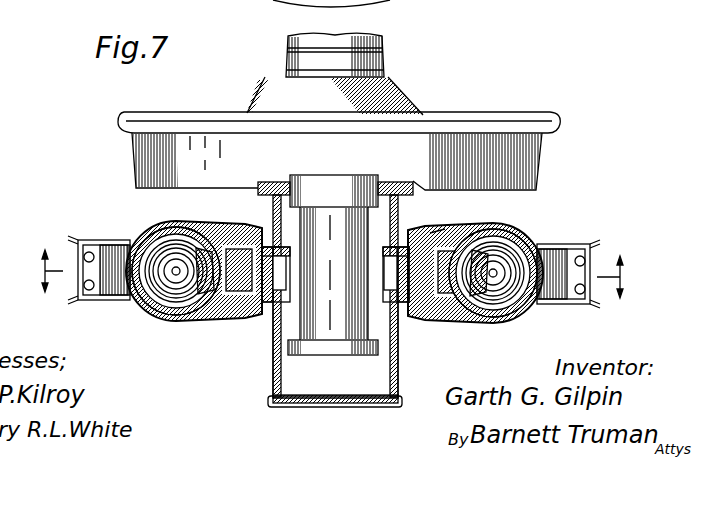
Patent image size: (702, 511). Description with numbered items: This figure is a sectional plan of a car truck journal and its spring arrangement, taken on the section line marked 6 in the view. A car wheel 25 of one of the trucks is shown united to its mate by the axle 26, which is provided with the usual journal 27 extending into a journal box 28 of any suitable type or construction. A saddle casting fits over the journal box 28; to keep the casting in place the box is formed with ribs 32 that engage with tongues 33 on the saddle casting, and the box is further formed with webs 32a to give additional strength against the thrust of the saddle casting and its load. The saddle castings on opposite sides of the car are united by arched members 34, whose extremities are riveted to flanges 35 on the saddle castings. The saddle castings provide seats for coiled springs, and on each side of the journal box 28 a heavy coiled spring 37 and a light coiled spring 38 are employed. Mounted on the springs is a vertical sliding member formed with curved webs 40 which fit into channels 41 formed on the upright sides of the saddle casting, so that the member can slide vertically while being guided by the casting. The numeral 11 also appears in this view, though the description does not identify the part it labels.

The section line 6- 6 is at (333, 274).
The spindle pocket 11 is at (397, 268).
The car wheel 25 is at (450, 118).
The axle 26 is at (373, 40).
The journal 27 is at (320, 227).
The journal box 28 is at (276, 378).
The rib 32 is at (262, 314).
The web 32a is at (295, 283).
The tongue 33 is at (430, 233).
The arched member 34 is at (80, 303).
The flange 35 is at (104, 240).
The heavy coiled spring 37 is at (165, 312).
The light coiled spring 38 is at (178, 292).
The curved web 40 is at (226, 313).
The channel 41 is at (256, 228).